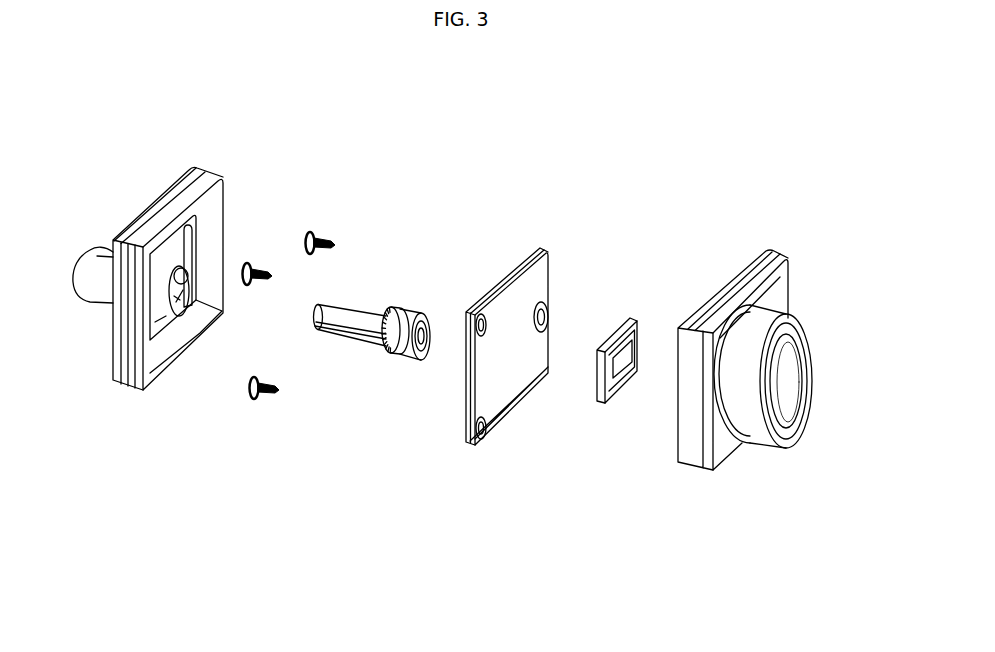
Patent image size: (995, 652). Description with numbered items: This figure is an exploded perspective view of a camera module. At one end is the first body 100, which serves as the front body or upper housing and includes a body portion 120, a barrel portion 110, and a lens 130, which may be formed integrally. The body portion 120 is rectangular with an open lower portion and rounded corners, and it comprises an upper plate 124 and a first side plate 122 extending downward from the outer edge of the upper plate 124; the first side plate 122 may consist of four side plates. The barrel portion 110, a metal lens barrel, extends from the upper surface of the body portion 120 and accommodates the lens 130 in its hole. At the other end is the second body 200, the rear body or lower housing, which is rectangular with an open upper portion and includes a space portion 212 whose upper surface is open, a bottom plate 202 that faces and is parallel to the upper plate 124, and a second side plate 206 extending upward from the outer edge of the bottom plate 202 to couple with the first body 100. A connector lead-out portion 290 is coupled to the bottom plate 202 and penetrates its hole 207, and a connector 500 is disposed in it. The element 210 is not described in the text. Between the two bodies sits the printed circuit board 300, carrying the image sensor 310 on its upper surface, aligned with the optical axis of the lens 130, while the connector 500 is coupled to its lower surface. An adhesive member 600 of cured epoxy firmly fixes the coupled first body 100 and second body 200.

The first body 100 is at (773, 381).
The barrel portion 110 is at (752, 435).
The body portion 120 is at (761, 317).
The first side plate 122 is at (732, 287).
The upper plate 124 is at (775, 285).
The lens 130 is at (778, 378).
The second body 200 is at (167, 257).
The bottom plate 202 is at (157, 270).
The second side plate 206 is at (160, 207).
The hole 207 is at (195, 258).
The side wall of cover 210 is at (130, 368).
The space portion 212 is at (160, 318).
The connector lead-out portion 290 is at (93, 252).
The printed circuit board 300 is at (545, 235).
The image sensor 310 is at (622, 387).
The connector 500 is at (372, 343).
The adhesive member 600 is at (319, 232).